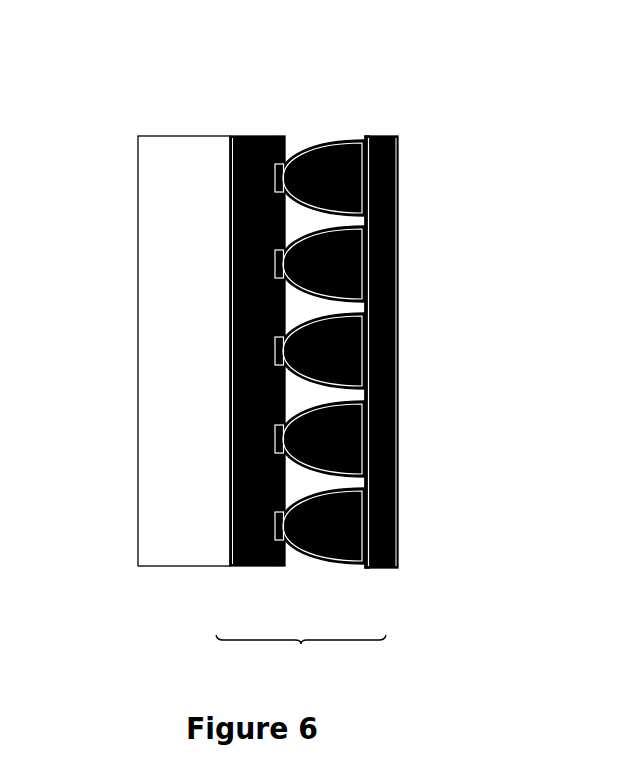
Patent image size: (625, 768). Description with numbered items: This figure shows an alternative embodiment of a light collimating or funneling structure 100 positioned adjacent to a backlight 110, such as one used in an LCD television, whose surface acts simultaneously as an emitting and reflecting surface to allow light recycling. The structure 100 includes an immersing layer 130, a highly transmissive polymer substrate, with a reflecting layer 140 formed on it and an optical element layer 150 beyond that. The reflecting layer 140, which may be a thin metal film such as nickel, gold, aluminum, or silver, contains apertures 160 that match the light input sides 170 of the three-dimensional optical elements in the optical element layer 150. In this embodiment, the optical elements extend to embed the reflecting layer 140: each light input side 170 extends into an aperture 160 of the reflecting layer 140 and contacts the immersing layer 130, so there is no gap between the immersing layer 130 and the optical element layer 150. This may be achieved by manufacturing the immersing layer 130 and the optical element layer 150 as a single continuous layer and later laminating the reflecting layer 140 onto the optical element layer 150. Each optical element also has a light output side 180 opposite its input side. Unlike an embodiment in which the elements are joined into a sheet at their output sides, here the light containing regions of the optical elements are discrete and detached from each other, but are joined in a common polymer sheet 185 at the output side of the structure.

The light collimating or funneling structure 100 is at (301, 452).
The backlight 110 is at (130, 160).
The immersing layer 130 is at (232, 128).
The reflecting layer 140 is at (267, 128).
The optical element layer 150 is at (322, 347).
The apertures 160 is at (267, 508).
The light input side 170 is at (285, 150).
The light output side 180 is at (345, 172).
The common polymer sheet 185 is at (377, 260).